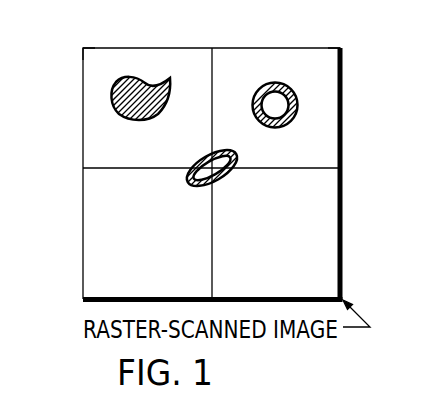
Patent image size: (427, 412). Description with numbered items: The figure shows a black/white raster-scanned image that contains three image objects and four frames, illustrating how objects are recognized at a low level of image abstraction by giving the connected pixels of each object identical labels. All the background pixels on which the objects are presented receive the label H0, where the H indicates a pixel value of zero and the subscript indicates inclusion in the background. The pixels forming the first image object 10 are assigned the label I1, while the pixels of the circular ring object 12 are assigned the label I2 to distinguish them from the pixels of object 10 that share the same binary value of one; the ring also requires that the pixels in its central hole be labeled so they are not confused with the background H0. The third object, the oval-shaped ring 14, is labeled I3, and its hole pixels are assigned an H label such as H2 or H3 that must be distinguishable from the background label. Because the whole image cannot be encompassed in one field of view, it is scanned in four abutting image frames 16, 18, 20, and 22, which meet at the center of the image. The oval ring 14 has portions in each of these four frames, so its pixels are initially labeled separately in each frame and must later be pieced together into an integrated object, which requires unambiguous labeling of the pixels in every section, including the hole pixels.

The image object 10 is at (116, 114).
The image object 12 is at (276, 99).
The image object 14 is at (221, 186).
The image frame 16 is at (99, 47).
The image frame 18 is at (339, 48).
The image frame 20 is at (343, 219).
The image frame 22 is at (82, 287).
The background pixel label H0 is at (163, 52).
The object pixel label I1 is at (164, 82).
The object pixel label I2 is at (281, 83).
The hole pixel label H2 is at (288, 119).
The hole pixel label H3 is at (208, 153).
The object pixel label I3 is at (194, 160).